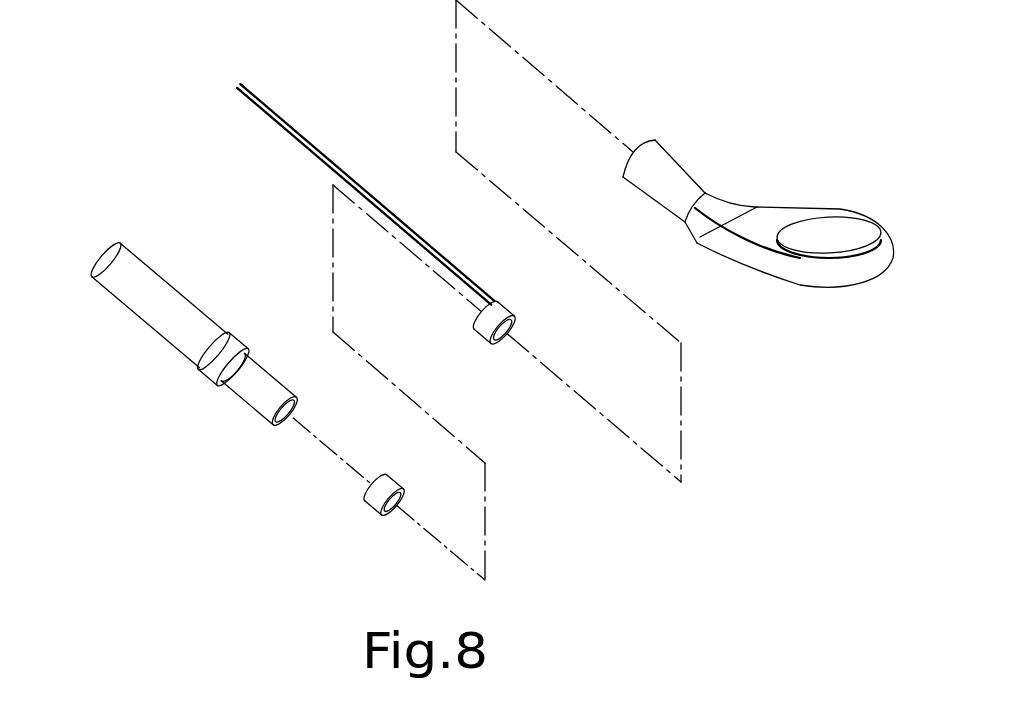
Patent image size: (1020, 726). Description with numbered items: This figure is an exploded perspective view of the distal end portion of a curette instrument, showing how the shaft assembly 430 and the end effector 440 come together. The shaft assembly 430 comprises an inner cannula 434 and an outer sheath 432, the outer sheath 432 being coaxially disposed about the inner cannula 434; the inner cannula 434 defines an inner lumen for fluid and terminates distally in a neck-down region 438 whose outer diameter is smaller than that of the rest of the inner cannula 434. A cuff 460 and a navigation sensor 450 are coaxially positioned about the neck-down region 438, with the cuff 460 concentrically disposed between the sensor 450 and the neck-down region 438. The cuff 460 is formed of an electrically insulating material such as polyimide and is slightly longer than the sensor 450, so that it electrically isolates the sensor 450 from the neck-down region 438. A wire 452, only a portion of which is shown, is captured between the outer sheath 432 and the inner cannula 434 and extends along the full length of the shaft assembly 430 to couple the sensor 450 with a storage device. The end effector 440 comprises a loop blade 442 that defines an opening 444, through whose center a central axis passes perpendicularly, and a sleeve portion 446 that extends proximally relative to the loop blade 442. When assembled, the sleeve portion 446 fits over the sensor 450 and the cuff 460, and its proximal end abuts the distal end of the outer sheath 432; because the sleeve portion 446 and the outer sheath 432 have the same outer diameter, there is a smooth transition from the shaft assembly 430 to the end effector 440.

The shaft assembly 430 is at (283, 430).
The outer sheath 432 is at (148, 282).
The inner cannula 434 is at (232, 348).
The neck-down region 438 is at (257, 417).
The end effector 440 is at (767, 185).
The loop blade 442 is at (877, 263).
The opening 444 is at (845, 212).
The sleeve portion 446 is at (663, 160).
The navigation sensor 450 is at (483, 338).
The wire 452 is at (280, 115).
The cuff 460 is at (377, 505).